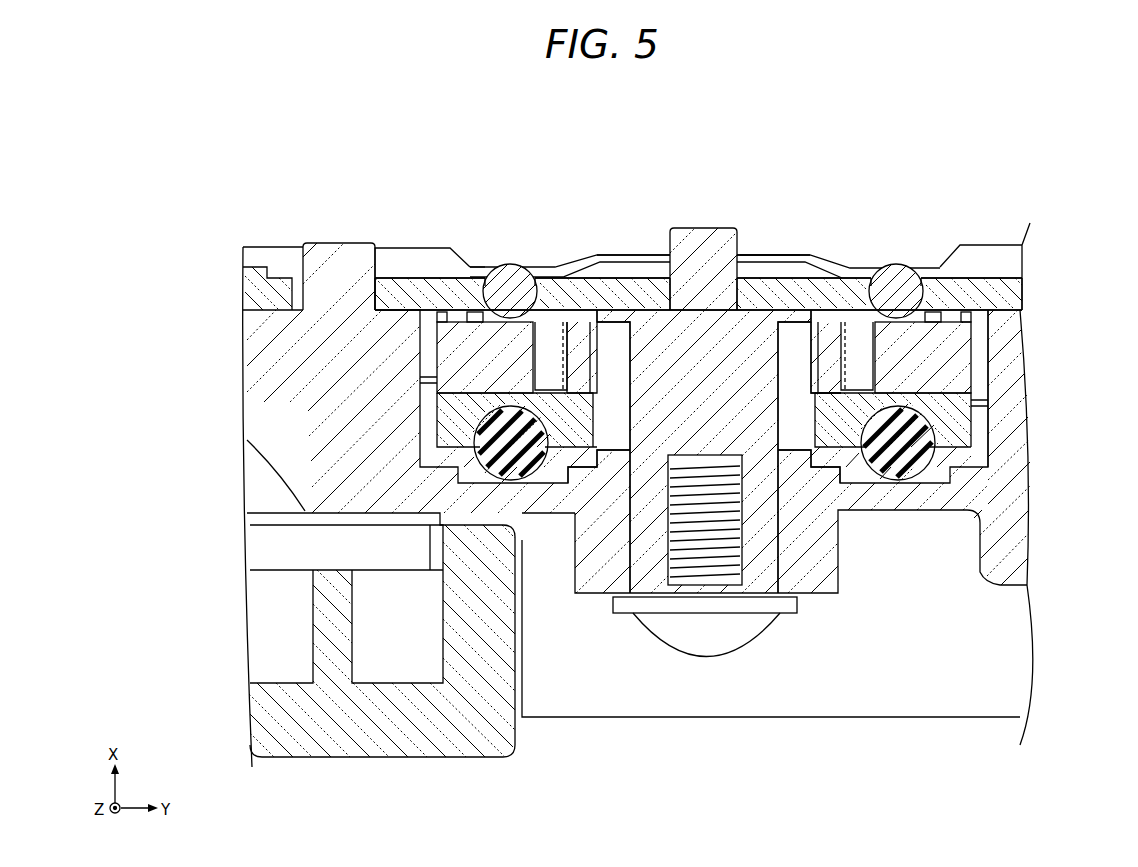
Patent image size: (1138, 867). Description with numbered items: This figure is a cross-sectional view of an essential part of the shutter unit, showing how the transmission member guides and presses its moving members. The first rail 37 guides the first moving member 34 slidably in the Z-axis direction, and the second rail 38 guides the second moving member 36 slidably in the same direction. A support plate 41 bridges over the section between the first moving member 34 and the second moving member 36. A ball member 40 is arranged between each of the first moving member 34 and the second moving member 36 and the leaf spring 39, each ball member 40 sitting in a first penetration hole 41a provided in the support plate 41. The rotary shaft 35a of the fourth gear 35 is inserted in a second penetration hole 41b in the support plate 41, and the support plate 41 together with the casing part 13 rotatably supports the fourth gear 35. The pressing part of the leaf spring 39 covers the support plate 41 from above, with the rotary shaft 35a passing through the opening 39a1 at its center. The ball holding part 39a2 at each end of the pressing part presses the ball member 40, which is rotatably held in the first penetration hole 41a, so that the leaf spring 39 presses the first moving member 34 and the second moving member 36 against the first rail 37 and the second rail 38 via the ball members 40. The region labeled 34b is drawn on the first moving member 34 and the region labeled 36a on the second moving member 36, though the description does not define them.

The casing part 13 is at (1007, 363).
The first moving member 34 is at (953, 328).
The engaging portion of second bearing holder 34b is at (863, 320).
The fourth gear 35 is at (608, 337).
The rotary shaft 35a is at (705, 240).
The second moving member 36 is at (447, 340).
The engaging portion of first bearing holder 36a is at (568, 322).
The first rail 37 is at (890, 457).
The second rail 38 is at (527, 457).
The leaf spring 39 is at (810, 242).
The opening 39a1 is at (752, 253).
The ball holding part 39a2 is at (476, 277).
The ball member 40 is at (508, 263).
The support plate 41 is at (997, 330).
The first penetration hole 41a is at (523, 277).
The second penetration hole 41b is at (690, 300).